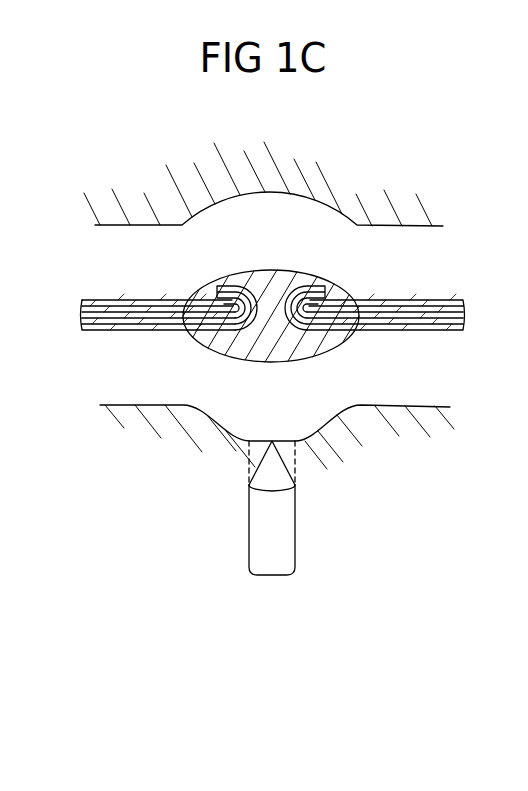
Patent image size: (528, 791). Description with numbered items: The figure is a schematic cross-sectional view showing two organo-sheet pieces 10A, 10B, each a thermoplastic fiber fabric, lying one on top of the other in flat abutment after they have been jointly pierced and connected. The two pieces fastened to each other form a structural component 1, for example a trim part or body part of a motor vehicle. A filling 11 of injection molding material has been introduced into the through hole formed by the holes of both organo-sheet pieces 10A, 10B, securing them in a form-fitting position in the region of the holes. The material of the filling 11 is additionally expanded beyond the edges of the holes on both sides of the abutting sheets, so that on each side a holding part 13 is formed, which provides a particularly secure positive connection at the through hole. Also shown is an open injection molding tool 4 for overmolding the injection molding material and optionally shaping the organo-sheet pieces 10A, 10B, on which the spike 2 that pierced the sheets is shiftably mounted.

The structural component 1 is at (433, 274).
The spike 2 is at (236, 526).
The injection molding tool 4 is at (448, 394).
The organo-sheet piece 10A is at (106, 287).
The organo-sheet piece 10B is at (114, 346).
The filling 11 is at (262, 341).
The holding part 13 is at (270, 257).